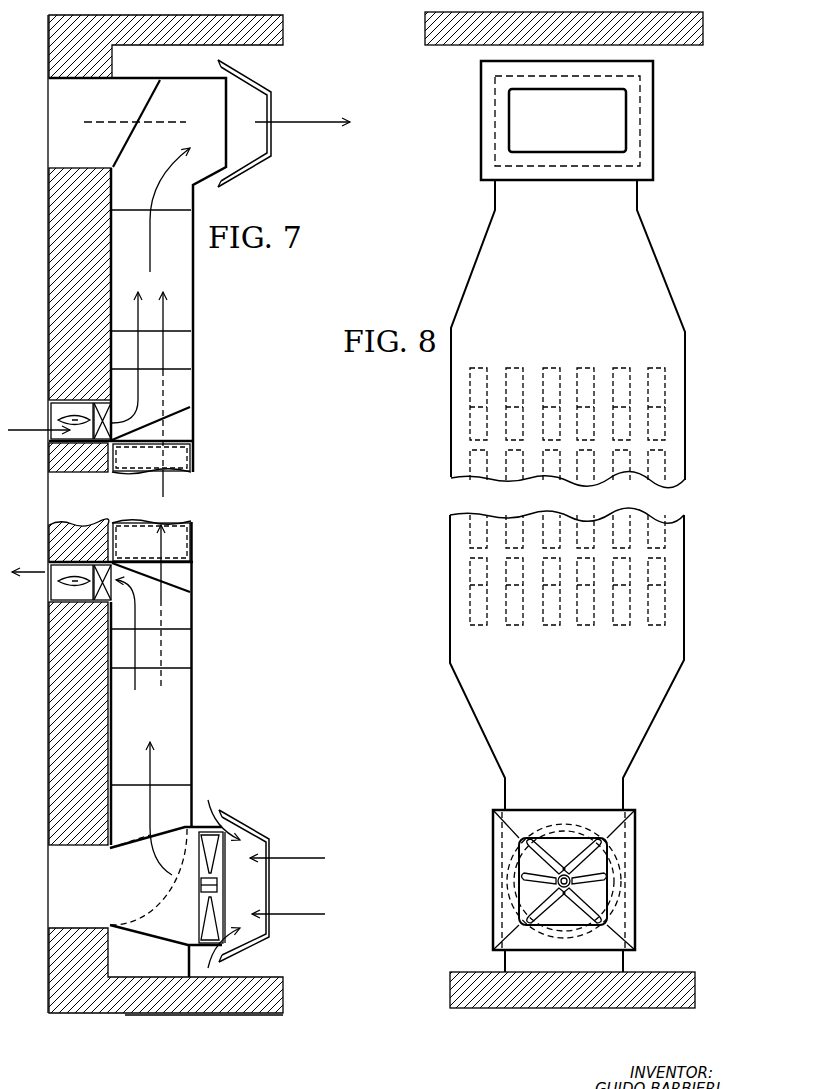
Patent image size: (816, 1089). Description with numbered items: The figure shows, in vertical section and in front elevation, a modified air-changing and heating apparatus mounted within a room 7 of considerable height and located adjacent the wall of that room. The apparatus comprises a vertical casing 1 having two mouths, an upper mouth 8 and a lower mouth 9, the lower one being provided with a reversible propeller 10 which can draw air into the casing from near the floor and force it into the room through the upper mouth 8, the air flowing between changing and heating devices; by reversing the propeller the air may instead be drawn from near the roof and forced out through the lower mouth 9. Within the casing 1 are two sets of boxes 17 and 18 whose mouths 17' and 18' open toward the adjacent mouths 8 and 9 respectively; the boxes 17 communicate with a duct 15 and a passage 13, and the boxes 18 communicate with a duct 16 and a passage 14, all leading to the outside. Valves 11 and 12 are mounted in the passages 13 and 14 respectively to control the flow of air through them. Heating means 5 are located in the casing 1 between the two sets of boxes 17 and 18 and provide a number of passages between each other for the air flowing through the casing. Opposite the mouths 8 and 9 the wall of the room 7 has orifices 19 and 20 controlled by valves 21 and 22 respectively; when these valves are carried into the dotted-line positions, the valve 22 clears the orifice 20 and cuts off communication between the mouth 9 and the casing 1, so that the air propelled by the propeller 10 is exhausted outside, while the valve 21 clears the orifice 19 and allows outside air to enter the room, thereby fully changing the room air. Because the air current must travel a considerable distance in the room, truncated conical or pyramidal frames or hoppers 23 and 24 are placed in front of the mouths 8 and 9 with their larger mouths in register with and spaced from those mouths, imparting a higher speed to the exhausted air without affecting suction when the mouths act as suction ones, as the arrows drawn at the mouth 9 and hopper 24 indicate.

In FIG. 7, the vertical casing 1 is at (178, 262).
In FIG. 8, the vertical casing 1 is at (478, 247).
In FIG. 7, the heating means 5 is at (177, 460).
In FIG. 7, the room 7 is at (247, 122).
In FIG. 8, the room 7 is at (549, 120).
In FIG. 7, the upper mouth 8 is at (229, 118).
In FIG. 8, the upper mouth 8 is at (640, 110).
In FIG. 7, the lower mouth 9 is at (224, 892).
In FIG. 8, the lower mouth 9 is at (613, 883).
In FIG. 7, the reversible propeller 10 is at (212, 837).
In FIG. 8, the reversible propeller 10 is at (596, 857).
In FIG. 7, the valve 11 is at (57, 418).
In FIG. 7, the valve 12 is at (62, 582).
In FIG. 7, the passage 13 is at (97, 423).
In FIG. 7, the passage 14 is at (48, 565).
In FIG. 7, the duct 15 is at (60, 447).
In FIG. 7, the duct 16 is at (97, 588).
In FIG. 7, the boxes 17 is at (178, 404).
In FIG. 8, the boxes 17 is at (569, 424).
In FIG. 7, the mouths of boxes 17 17' is at (201, 346).
In FIG. 8, the mouths of boxes 17 17' is at (511, 348).
In FIG. 7, the boxes 18 is at (175, 585).
In FIG. 8, the boxes 18 is at (592, 570).
In FIG. 7, the mouths of boxes 18 18' is at (206, 645).
In FIG. 8, the mouths of boxes 18 18' is at (516, 649).
In FIG. 7, the orifice 19 is at (62, 110).
In FIG. 7, the orifice 20 is at (47, 898).
In FIG. 7, the valve 21 is at (127, 143).
In FIG. 7, the valve 22 is at (113, 879).
In FIG. 7, the hopper 23 is at (264, 157).
In FIG. 8, the hopper 23 is at (493, 145).
In FIG. 7, the hopper 24 is at (258, 835).
In FIG. 8, the hopper 24 is at (493, 838).